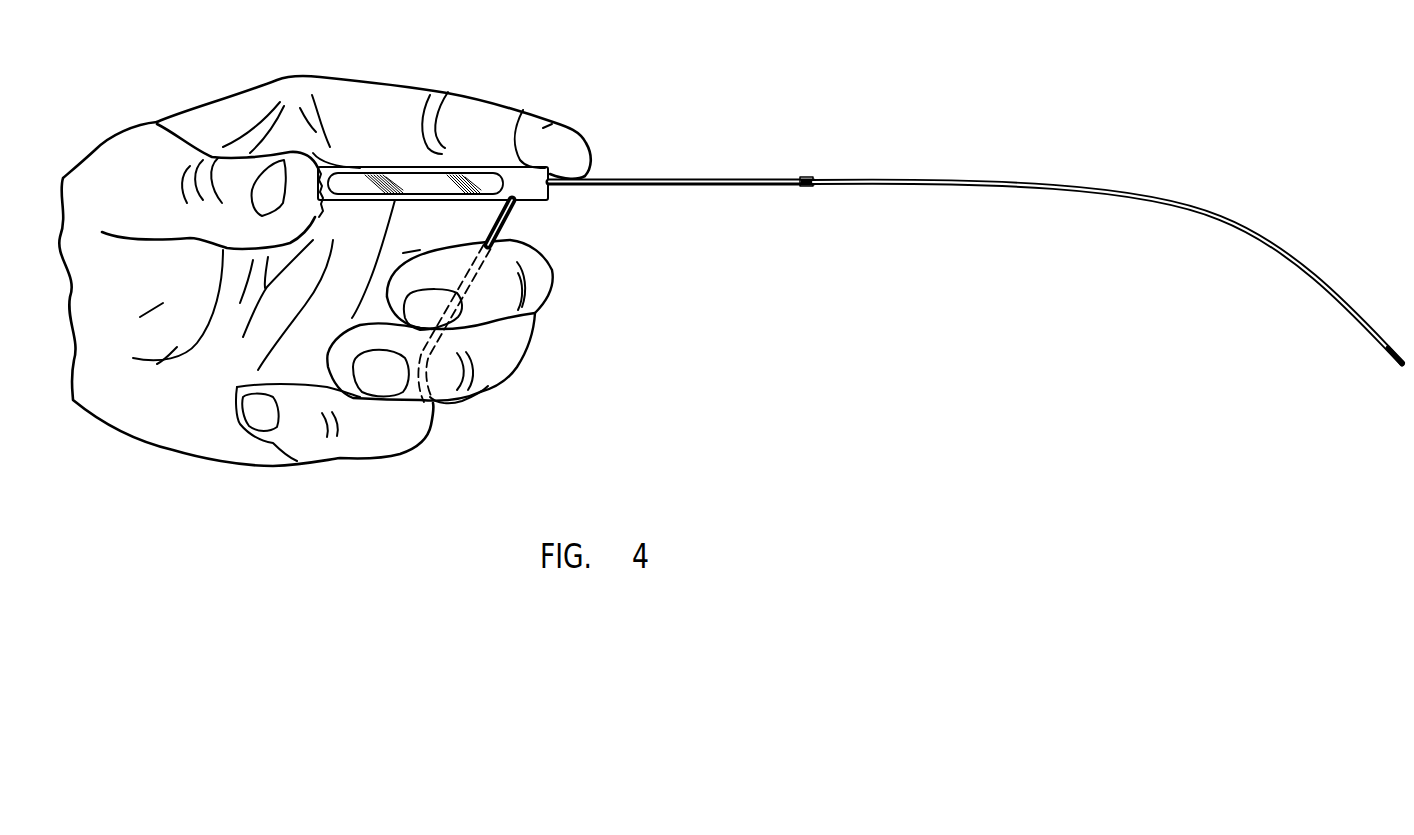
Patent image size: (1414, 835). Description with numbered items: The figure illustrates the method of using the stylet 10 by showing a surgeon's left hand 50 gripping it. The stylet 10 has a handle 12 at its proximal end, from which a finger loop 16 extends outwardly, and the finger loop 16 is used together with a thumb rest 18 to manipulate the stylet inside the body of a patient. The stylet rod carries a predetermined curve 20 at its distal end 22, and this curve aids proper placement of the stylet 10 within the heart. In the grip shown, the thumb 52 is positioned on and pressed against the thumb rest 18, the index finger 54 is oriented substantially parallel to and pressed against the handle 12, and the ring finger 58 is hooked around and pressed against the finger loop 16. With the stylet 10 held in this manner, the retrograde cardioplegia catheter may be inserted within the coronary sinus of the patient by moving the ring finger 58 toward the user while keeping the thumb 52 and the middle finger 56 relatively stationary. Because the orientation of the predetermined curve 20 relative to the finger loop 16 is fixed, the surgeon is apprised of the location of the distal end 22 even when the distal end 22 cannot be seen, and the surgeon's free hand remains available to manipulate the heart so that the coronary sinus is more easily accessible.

The stylet 10 is at (757, 218).
The handle 12 is at (523, 182).
The finger loop 16 is at (472, 329).
The thumb rest 18 is at (362, 167).
The predetermined curve 20 is at (1287, 252).
The distal end 22 is at (1392, 350).
The left hand 50 is at (228, 352).
The thumb 52 is at (170, 177).
The index finger 54 is at (484, 120).
The middle finger 56 is at (535, 267).
The ring finger 58 is at (495, 347).